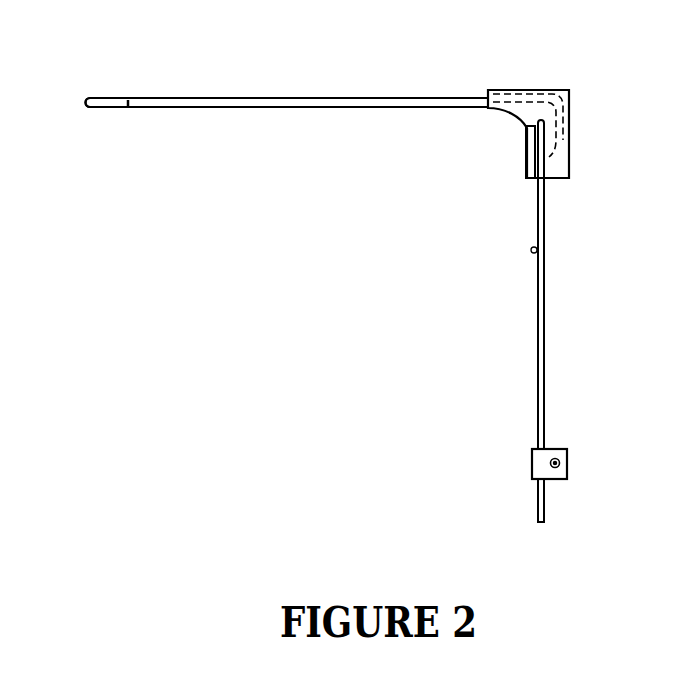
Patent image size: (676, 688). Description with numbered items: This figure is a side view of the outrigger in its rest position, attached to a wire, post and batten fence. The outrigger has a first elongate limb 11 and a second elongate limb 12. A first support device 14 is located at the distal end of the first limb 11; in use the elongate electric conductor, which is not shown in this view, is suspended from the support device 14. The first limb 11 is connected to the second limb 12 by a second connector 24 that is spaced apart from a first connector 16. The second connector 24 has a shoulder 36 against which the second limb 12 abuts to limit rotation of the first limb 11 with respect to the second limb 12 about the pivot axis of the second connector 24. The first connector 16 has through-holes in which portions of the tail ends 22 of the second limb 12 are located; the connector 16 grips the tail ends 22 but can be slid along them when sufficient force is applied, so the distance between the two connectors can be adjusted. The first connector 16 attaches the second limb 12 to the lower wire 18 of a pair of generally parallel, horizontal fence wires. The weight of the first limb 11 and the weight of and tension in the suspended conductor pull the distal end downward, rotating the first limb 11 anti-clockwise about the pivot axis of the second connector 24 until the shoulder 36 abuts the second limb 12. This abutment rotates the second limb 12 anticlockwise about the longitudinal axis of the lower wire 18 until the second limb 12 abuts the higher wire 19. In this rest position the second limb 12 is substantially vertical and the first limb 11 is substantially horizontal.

The first elongate limb 11 is at (287, 98).
The first support device 14 is at (113, 99).
The second connector 24 is at (522, 116).
The shoulder 36 is at (526, 178).
The second elongate limb 12 is at (546, 348).
The higher wire 19 is at (531, 251).
The first connector 16 is at (532, 467).
The wire 18 is at (561, 463).
The tail ends 22 is at (546, 498).